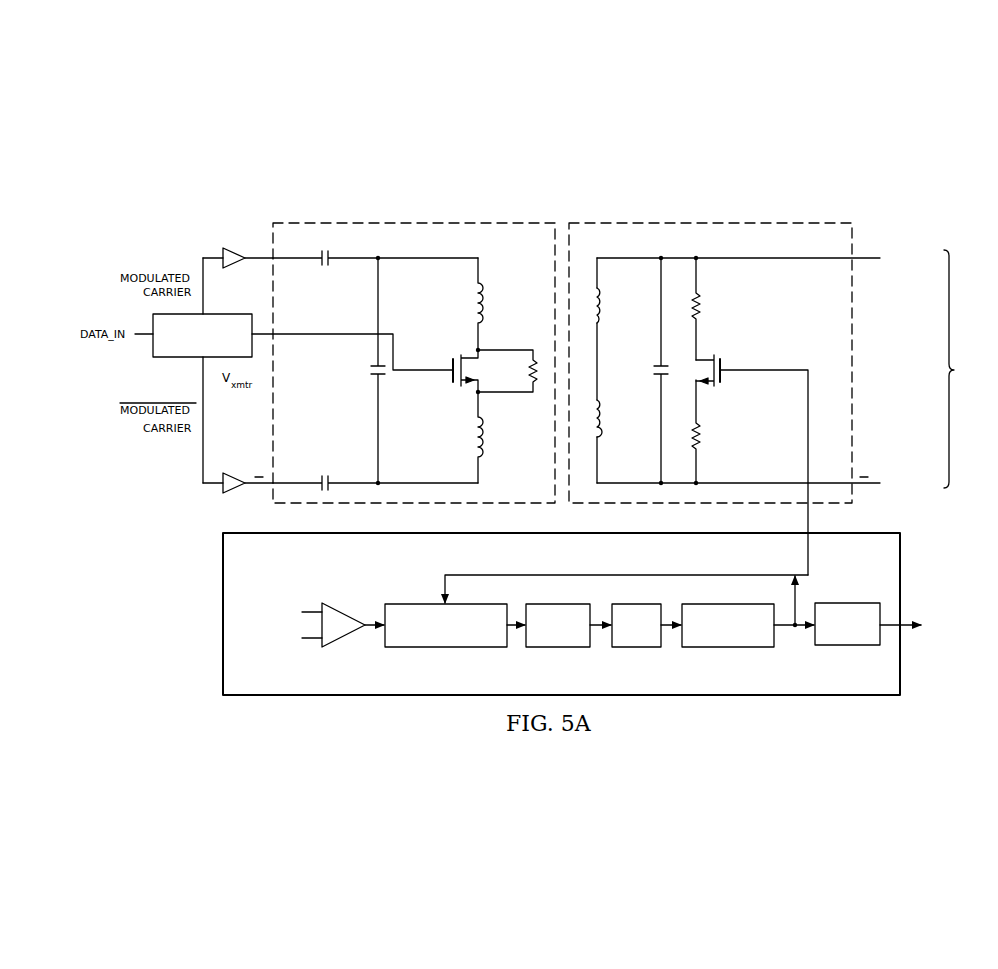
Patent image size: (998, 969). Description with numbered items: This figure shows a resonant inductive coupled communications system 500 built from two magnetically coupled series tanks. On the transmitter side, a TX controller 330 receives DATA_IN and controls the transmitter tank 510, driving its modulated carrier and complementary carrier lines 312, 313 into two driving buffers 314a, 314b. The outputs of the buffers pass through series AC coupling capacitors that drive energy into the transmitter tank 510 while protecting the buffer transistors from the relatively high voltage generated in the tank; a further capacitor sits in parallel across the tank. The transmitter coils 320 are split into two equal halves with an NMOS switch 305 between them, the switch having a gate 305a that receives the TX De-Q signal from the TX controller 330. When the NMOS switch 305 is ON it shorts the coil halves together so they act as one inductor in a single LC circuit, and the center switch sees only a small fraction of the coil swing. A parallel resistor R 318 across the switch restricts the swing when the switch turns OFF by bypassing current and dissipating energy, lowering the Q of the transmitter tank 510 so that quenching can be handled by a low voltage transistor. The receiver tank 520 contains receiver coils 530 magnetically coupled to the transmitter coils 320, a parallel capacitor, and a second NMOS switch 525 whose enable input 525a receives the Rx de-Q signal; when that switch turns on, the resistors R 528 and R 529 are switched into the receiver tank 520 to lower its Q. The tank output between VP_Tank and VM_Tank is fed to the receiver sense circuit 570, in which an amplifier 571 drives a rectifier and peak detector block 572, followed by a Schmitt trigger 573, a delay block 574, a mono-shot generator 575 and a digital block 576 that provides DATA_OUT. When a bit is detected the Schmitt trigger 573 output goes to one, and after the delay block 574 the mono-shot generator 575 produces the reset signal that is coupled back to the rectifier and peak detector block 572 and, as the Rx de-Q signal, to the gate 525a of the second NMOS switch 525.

The resonant inductive coupled communications system 500 is at (800, 202).
The transmitter tank 510 is at (395, 221).
The receiver tank 520 is at (728, 221).
The modulated carrier signal line 312 is at (213, 256).
The inverted modulated carrier signal line 313 is at (213, 487).
The driving buffer 314a is at (237, 252).
The driving buffer 314b is at (237, 474).
The TX controller 330 is at (219, 313).
The transmitter coils 320 is at (488, 298).
The resistor R1 318 is at (529, 368).
The NMOS switch SW1 305 is at (445, 383).
The gate of switch SW1 305a is at (452, 361).
The receiver coils 530 is at (606, 302).
The resistor R 528 is at (702, 308).
The resistor R 529 is at (702, 434).
The second NMOS SW2 525 is at (737, 380).
The enable input (gate electrode) 525a is at (723, 363).
The receiver sense circuit 570 is at (221, 624).
The amplifier 571 is at (347, 640).
The rectifier and peak detector block 572 is at (426, 648).
The Schmitt trigger 573 is at (558, 648).
The delay block 574 is at (636, 648).
The mono-shot generator 575 is at (728, 648).
The digital block 576 is at (850, 645).